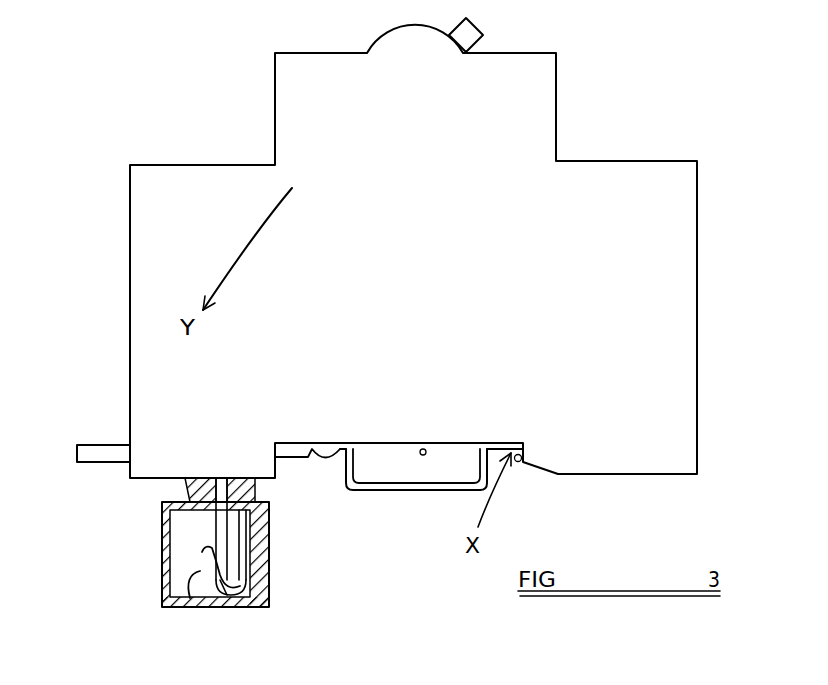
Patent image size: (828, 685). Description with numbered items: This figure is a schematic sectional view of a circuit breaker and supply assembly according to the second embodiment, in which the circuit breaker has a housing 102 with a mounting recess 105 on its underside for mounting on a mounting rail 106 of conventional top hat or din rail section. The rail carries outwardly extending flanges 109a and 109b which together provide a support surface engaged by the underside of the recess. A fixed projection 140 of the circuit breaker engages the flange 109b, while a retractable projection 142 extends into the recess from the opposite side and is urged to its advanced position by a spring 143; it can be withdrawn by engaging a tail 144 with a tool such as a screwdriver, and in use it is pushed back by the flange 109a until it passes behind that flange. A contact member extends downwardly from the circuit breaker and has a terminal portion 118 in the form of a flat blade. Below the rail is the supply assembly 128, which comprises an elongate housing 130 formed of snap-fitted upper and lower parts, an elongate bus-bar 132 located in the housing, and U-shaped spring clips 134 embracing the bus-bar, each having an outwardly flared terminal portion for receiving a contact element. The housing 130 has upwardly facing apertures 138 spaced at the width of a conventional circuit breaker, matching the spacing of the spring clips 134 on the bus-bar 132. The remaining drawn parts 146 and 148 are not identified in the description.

The housing 102 is at (697, 342).
The mounting recess 105 is at (422, 445).
The mounting rail 106 is at (385, 490).
The flange 109a is at (326, 443).
The flange 109b is at (560, 405).
The terminal portion 118 is at (224, 598).
The supply assembly 128 is at (212, 563).
The housing 130 is at (262, 580).
The bus-bar 132 is at (232, 540).
The spring clip 134 is at (200, 606).
The aperture 138 is at (195, 555).
The fixed projection 140 is at (516, 462).
The retractable projection 142 is at (283, 447).
The spring 143 is at (341, 445).
The tail 144 is at (93, 450).
The clip 146 is at (220, 508).
The neck 148 is at (233, 478).